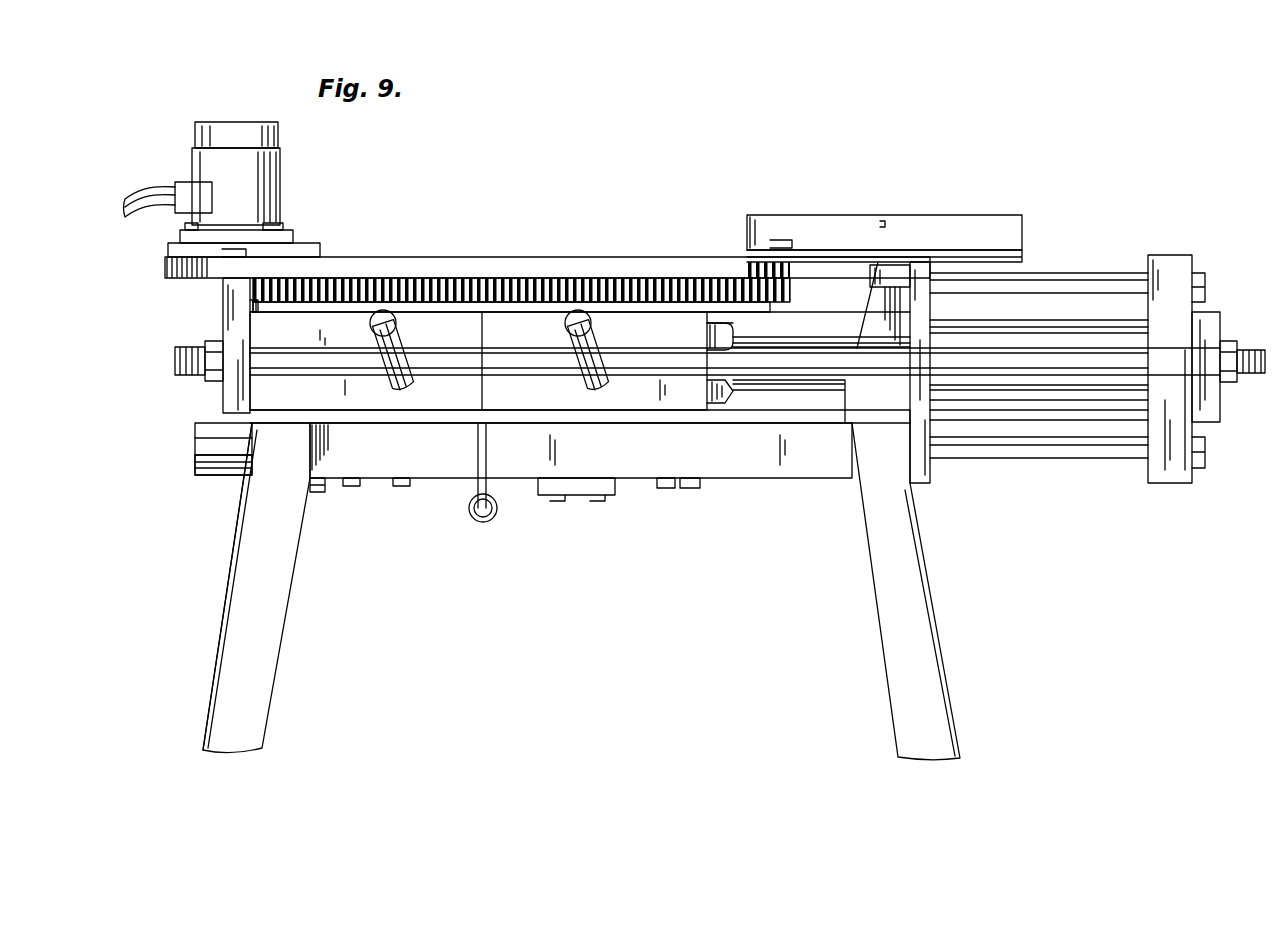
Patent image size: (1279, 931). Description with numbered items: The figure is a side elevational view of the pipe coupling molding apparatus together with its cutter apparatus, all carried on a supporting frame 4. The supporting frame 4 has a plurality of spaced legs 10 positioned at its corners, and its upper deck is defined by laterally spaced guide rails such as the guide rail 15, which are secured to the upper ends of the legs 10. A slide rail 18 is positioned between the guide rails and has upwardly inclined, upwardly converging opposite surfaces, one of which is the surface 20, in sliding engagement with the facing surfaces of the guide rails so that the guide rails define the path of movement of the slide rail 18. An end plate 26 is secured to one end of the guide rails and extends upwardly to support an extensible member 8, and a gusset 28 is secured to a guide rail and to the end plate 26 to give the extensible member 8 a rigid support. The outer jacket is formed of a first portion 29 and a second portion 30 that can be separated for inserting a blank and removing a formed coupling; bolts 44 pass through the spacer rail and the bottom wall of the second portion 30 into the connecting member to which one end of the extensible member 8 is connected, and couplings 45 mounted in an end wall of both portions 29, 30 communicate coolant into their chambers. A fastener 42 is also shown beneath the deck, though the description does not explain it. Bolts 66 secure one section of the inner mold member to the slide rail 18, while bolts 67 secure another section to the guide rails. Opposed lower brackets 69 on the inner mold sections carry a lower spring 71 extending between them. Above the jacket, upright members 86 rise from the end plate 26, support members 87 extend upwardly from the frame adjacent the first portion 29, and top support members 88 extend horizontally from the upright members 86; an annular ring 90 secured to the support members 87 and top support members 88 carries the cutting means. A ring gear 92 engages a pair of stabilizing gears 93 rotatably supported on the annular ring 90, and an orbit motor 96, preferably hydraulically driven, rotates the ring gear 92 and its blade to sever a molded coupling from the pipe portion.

The supporting frame 4 is at (226, 612).
The extensible member 8 is at (785, 390).
The legs 10 is at (268, 632).
The guide rail 15 is at (755, 465).
The slide rail 18 is at (196, 460).
The opposite surface of slide rail 20 is at (235, 465).
The end plate 26 is at (935, 278).
The gusset 28 is at (872, 324).
The first portion of outer jacket 29 is at (350, 333).
The second portion of outer jacket 30 is at (672, 333).
The bolt 42 is at (313, 492).
The bolts 44 is at (692, 490).
The couplings 45 is at (398, 325).
The bolts 66 is at (396, 488).
The bolts 67 is at (600, 502).
The lower bracket 69 is at (478, 455).
The lower spring 71 is at (470, 522).
The upright members 86 is at (875, 275).
The support members 87 is at (240, 297).
The top support members 88 is at (818, 226).
The annular ring 90 is at (600, 262).
The ring gear 92 is at (462, 290).
The stabilizing gears 93 is at (752, 303).
The orbit motor 96 is at (282, 190).